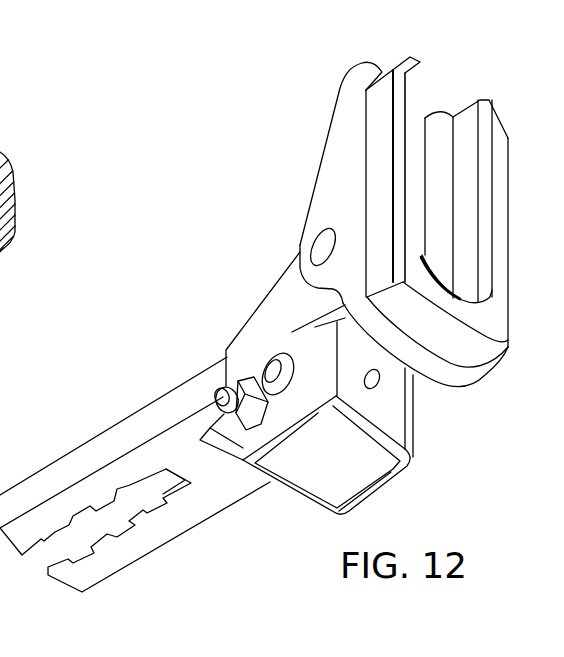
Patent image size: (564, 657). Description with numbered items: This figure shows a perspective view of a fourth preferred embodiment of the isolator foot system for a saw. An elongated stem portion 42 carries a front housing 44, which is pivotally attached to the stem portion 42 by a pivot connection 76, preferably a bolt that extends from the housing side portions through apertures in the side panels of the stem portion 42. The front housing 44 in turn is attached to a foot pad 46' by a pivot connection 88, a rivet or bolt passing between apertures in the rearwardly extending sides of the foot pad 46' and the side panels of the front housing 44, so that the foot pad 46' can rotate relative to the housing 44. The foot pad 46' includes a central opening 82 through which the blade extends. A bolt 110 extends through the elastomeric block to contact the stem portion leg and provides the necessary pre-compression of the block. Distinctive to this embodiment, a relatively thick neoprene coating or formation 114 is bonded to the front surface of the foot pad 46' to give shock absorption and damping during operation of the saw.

The stem portion 42 is at (55, 463).
The front housing 44 is at (260, 306).
The foot pad 46' is at (392, 172).
The pivot connection 76 is at (239, 389).
The central opening 82 is at (437, 132).
The pivot connection 88 is at (323, 247).
The bolt 110 is at (283, 378).
The neoprene coating or formation 114 is at (493, 320).